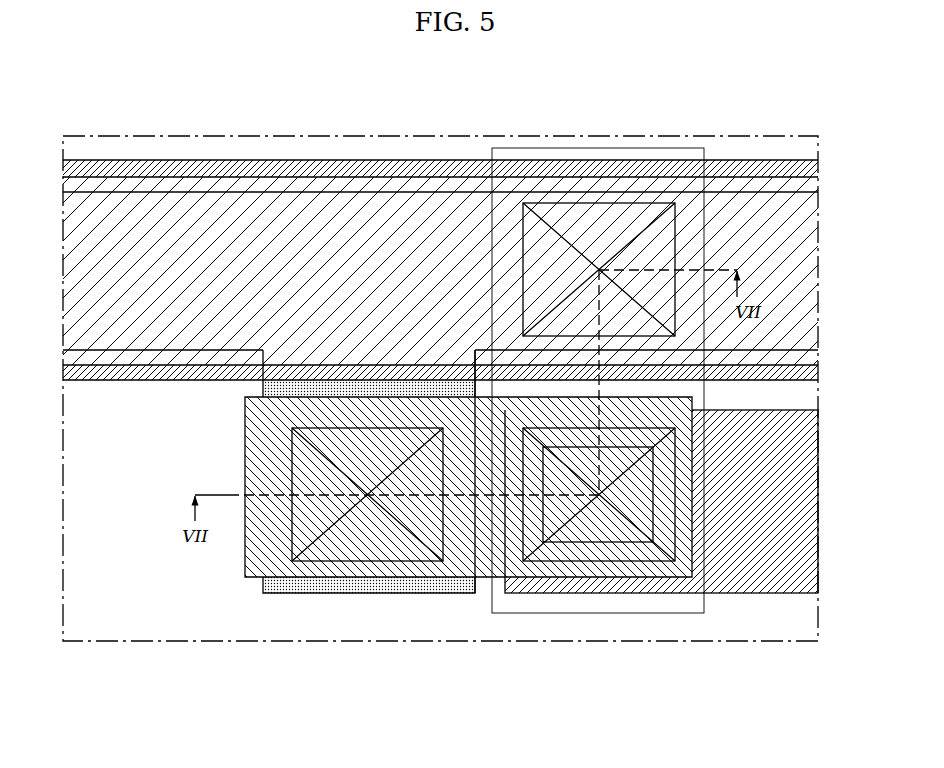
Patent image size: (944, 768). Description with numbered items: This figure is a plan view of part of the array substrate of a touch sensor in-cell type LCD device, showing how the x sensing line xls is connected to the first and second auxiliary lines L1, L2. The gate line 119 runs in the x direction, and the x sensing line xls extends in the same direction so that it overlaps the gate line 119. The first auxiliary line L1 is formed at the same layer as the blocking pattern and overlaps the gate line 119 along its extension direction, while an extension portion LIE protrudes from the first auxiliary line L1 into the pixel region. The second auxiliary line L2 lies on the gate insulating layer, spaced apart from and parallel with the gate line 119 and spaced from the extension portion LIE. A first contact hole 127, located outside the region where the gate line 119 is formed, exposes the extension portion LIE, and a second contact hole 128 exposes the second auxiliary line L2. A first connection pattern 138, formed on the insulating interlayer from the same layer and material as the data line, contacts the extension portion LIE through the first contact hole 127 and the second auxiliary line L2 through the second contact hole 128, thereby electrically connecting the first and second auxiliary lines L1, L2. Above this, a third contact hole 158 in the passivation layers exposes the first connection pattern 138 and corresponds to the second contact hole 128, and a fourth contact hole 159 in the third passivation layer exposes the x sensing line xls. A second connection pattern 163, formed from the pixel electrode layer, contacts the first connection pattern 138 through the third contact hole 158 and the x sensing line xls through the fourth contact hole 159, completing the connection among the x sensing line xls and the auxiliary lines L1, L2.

The gate line 119 is at (389, 158).
The x sensing line xls is at (308, 173).
The first auxiliary line L1 is at (147, 354).
The extension portion LIE is at (290, 597).
The second auxiliary line L2 is at (748, 595).
The first contact hole 127 is at (348, 550).
The first connection pattern 138 is at (481, 582).
The second contact hole 128 is at (605, 533).
The third contact hole 158 is at (557, 548).
The second connection pattern 163 is at (655, 146).
The fourth contact hole 159 is at (600, 217).